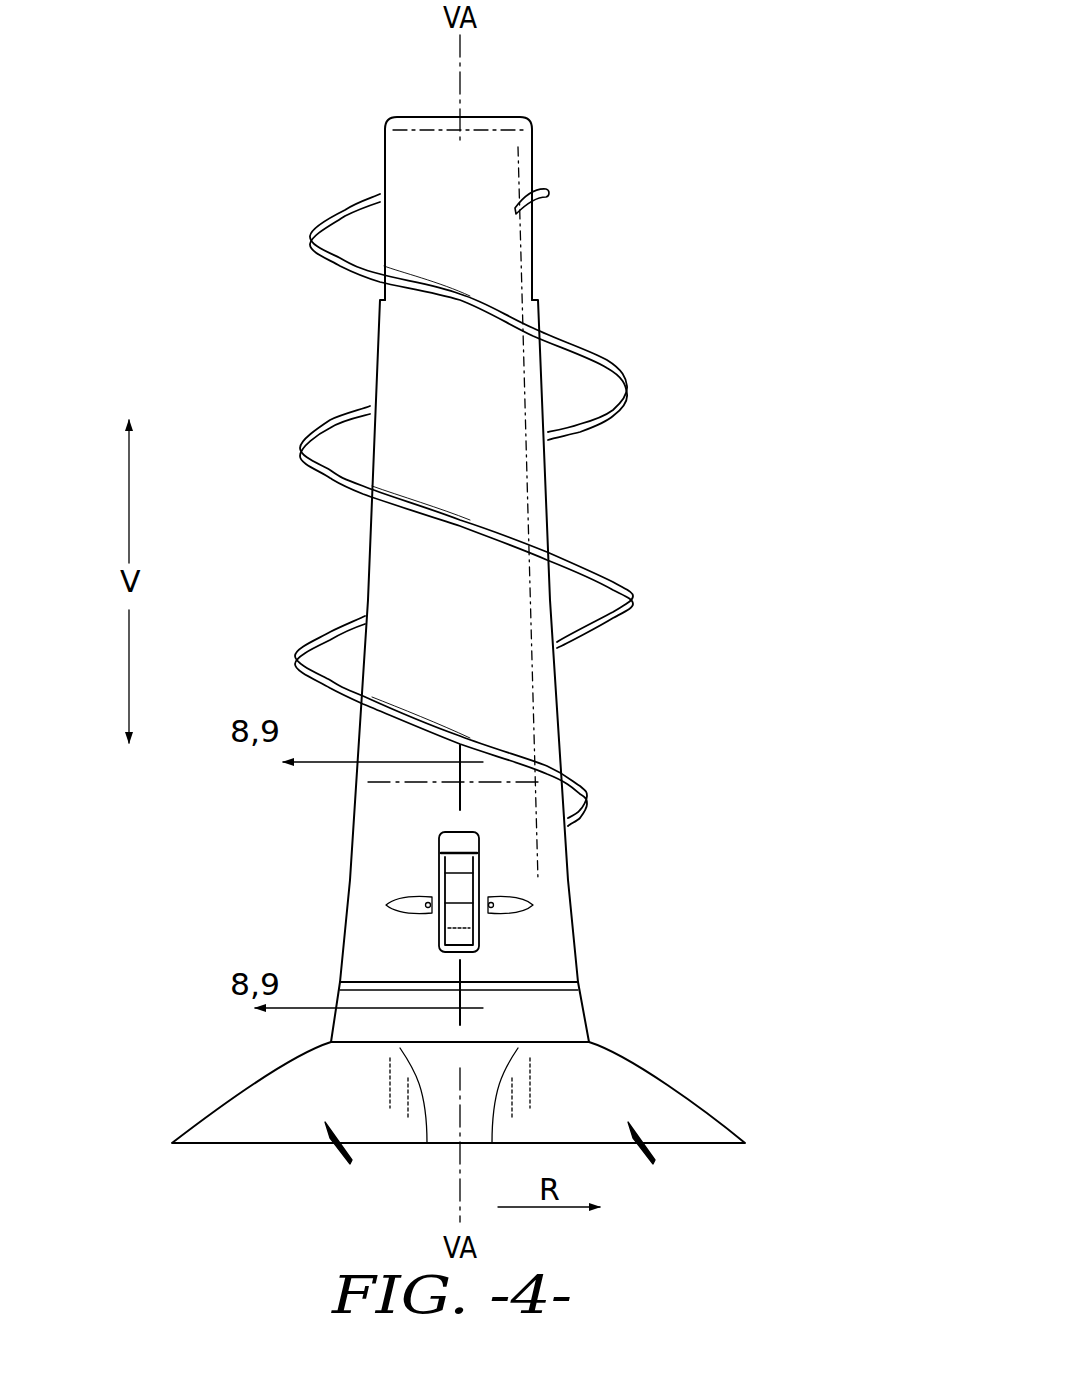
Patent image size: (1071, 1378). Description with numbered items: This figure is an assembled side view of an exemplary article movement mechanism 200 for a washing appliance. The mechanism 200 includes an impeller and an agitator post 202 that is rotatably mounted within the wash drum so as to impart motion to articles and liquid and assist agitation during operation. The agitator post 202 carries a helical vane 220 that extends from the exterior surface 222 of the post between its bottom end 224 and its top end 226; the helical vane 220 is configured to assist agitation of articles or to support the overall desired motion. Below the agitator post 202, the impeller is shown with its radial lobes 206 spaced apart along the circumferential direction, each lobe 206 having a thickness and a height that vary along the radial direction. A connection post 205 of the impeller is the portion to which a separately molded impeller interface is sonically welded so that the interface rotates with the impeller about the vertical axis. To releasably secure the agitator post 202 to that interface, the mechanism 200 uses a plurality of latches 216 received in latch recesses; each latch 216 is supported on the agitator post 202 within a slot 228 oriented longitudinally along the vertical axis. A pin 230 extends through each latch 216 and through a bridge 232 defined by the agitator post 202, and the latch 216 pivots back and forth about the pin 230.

The article movement mechanism 200 is at (670, 144).
The agitator post 202 is at (397, 158).
The connection post 205 is at (567, 1017).
The radial lobe 206 is at (650, 1098).
The latch 216 is at (461, 875).
The helical vane 220 is at (612, 608).
The exterior surface 222 is at (545, 270).
The bottom end 224 is at (598, 952).
The top end 226 is at (557, 146).
The slot 228 is at (437, 843).
The pin 230 is at (430, 905).
The bridge 232 is at (430, 917).